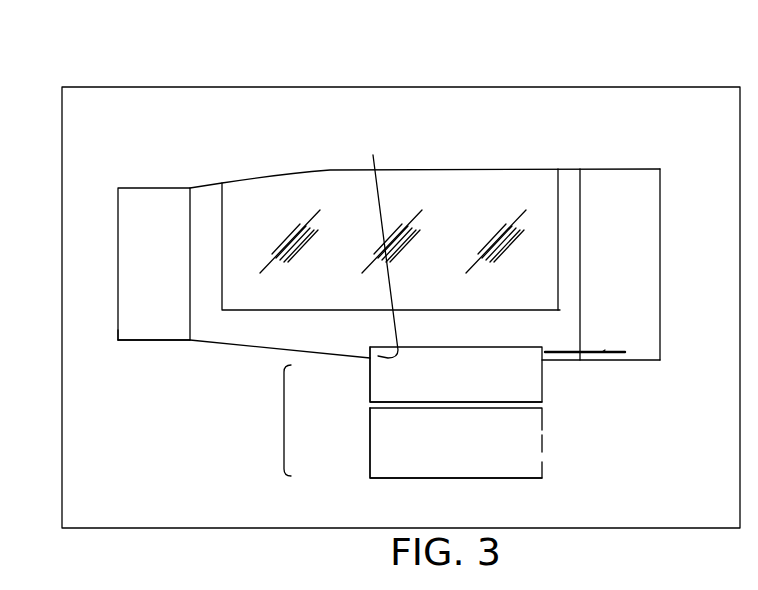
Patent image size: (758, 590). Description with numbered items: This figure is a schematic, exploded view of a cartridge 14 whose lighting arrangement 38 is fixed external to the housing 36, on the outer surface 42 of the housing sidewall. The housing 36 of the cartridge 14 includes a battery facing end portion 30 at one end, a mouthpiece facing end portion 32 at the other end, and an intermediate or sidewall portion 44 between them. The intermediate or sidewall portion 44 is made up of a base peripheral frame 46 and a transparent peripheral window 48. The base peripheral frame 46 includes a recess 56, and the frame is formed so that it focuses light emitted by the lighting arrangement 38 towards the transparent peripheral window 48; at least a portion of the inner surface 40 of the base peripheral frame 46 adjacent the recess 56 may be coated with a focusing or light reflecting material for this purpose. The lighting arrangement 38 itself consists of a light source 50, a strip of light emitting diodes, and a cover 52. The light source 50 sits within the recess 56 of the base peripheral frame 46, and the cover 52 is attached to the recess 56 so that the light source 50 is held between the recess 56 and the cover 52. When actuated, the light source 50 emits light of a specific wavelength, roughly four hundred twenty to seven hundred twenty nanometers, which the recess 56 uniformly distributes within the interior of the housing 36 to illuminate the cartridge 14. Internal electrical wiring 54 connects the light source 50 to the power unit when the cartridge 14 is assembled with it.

The cartridge 14 is at (94, 84).
The battery facing end portion 30 is at (638, 360).
The mouthpiece facing end portion 32 is at (135, 342).
The housing 36 is at (162, 177).
The lighting arrangement 38 is at (284, 420).
The inner surface 40 is at (120, 336).
The outer surface 42 is at (568, 360).
The intermediate or sidewall portion 44 is at (456, 165).
The base peripheral frame 46 is at (490, 347).
The transparent peripheral window 48 is at (393, 237).
The light source 50 is at (410, 402).
The cover 52 is at (415, 478).
The internal electrical wiring 54 is at (602, 352).
The recess 56 is at (378, 241).